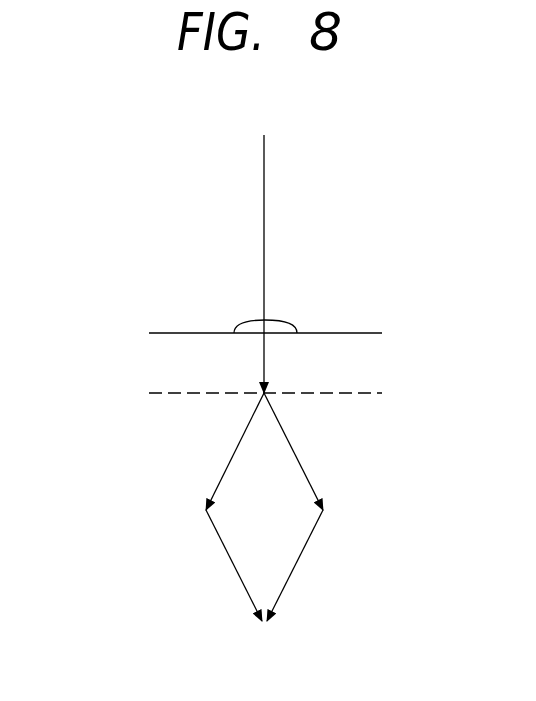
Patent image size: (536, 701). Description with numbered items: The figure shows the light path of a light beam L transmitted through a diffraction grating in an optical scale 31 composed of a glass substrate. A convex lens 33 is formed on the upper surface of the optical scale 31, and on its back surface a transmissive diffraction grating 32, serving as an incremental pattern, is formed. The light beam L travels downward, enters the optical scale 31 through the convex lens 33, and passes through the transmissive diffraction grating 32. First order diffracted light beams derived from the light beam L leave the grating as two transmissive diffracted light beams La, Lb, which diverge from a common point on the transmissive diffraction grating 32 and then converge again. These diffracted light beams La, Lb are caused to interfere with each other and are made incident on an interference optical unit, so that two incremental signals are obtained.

The light beam L is at (265, 246).
The optical scale 31 is at (357, 333).
The transmissive diffraction grating 32 is at (178, 395).
The convex lens 33 is at (283, 320).
The transmissive diffracted light beam La is at (228, 460).
The transmissive diffracted light beam Lb is at (305, 469).